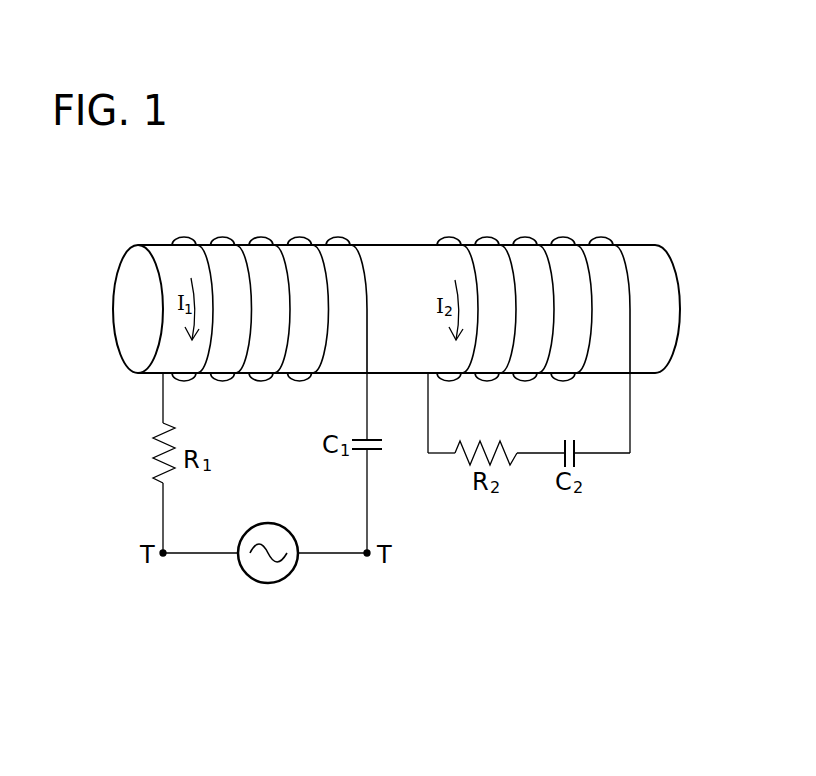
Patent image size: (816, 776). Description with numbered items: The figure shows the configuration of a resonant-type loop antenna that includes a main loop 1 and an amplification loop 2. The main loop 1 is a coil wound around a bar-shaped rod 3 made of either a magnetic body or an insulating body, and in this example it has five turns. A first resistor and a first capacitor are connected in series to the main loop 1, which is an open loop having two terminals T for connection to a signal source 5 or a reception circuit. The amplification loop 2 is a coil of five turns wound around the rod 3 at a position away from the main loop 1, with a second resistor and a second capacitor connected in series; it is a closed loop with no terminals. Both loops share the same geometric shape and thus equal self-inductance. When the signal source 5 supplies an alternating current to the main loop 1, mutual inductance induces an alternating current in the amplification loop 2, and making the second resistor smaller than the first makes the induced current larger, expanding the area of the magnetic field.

The main loop 1 is at (189, 241).
The amplification loop 2 is at (454, 241).
The bar-shaped rod 3 is at (646, 241).
The signal source 5 is at (268, 583).